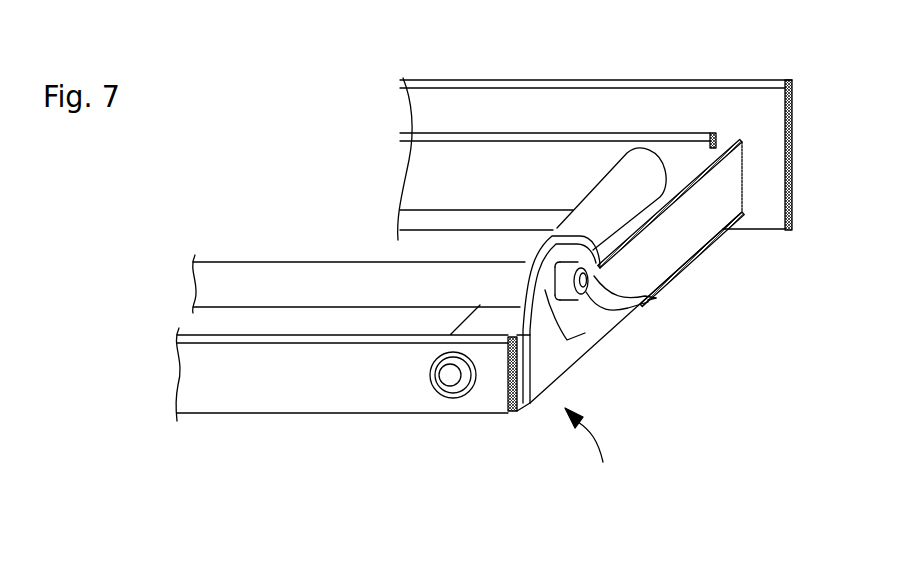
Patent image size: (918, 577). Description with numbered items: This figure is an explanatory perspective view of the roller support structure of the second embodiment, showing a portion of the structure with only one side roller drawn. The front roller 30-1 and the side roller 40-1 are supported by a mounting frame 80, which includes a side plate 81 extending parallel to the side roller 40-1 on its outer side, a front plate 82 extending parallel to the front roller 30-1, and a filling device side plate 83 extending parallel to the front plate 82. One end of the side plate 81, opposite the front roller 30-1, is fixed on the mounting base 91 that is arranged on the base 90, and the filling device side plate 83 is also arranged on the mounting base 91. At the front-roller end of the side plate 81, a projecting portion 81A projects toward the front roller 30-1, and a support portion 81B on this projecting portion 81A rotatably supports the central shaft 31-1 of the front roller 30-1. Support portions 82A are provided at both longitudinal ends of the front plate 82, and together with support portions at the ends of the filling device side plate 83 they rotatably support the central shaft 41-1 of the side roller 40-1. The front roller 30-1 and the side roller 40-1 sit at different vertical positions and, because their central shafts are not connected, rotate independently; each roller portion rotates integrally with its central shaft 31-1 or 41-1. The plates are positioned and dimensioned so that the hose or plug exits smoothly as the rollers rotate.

The base 90 is at (668, 32).
The mounting base 91 is at (742, 95).
The filling device side plate 83 is at (530, 137).
The side roller 40-1 is at (628, 175).
The front roller 30-1 is at (332, 272).
The front plate 82 is at (293, 403).
The support portion 82A is at (435, 390).
The central shaft 41-1 is at (456, 383).
The side plate 81 is at (687, 245).
The projecting portion 81A is at (585, 333).
The support portion 81B is at (630, 313).
The central shaft 31-1 is at (648, 300).
The mounting frame 80 is at (590, 450).